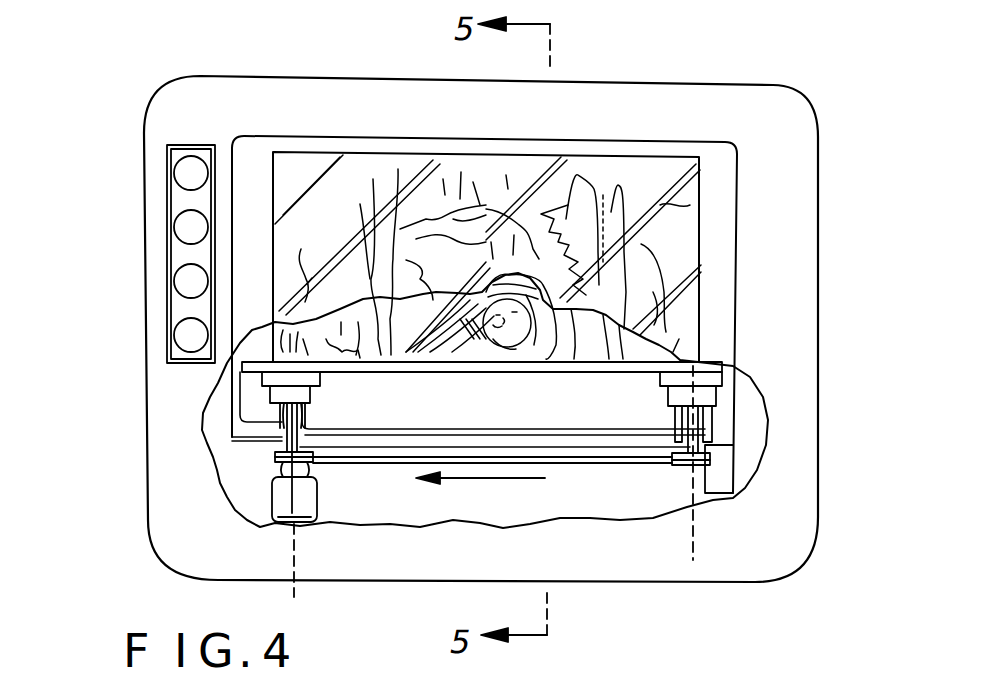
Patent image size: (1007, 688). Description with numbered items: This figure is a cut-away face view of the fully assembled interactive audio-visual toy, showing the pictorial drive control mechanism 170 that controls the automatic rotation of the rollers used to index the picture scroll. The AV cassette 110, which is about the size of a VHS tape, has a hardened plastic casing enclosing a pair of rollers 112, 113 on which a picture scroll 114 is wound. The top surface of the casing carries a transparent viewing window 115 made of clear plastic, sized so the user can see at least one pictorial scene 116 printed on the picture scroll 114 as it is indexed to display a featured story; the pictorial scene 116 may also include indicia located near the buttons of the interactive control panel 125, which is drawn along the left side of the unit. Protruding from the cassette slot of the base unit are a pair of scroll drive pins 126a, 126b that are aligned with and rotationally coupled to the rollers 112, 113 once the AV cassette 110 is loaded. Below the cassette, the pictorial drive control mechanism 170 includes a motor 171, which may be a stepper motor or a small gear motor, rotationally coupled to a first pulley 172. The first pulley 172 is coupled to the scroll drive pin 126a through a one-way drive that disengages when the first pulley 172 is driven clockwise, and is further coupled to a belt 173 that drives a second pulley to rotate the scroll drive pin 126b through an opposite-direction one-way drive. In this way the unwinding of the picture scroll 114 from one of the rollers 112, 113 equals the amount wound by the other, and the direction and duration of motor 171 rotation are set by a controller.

The AV cassette 110 is at (481, 296).
The roller 112 is at (335, 401).
The roller 113 is at (635, 407).
The picture scroll 114 is at (488, 287).
The transparent viewing window 115 is at (527, 190).
The pictorial scene 116 is at (482, 398).
The interactive control panel 125 is at (140, 254).
The scroll drive pin 126a is at (166, 428).
The scroll drive pin 126b is at (809, 402).
The pictorial drive control mechanism 170 is at (555, 548).
The motor 171 is at (197, 489).
The first pulley 172 is at (394, 493).
The belt 173 is at (803, 484).